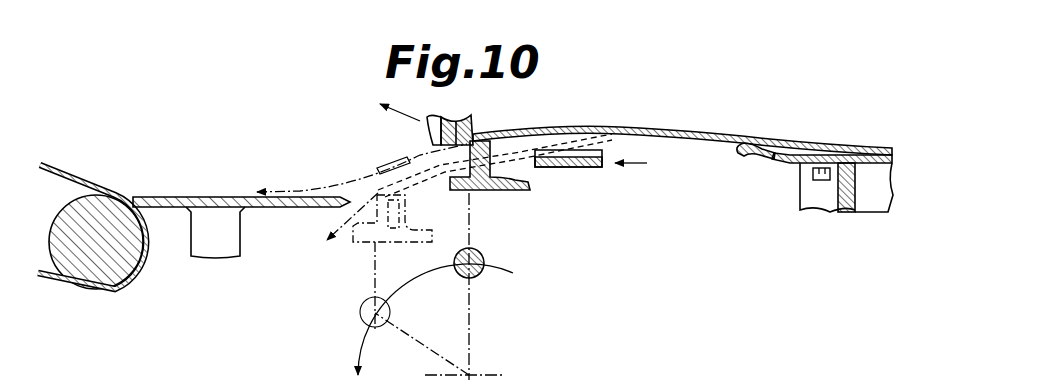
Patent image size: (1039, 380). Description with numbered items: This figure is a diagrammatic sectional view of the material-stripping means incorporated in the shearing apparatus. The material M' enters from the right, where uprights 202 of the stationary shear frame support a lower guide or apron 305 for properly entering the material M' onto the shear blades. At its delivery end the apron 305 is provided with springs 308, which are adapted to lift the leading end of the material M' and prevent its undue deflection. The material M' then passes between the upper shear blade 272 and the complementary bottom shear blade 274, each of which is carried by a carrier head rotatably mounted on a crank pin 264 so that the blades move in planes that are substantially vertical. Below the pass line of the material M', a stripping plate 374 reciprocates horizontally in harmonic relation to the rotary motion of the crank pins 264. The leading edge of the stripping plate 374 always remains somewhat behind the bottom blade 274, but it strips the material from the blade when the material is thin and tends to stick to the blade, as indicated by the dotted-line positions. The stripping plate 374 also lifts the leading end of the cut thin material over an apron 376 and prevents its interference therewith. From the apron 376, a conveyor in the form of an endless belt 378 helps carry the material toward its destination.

The endless belt 378 is at (80, 180).
The apron 376 is at (293, 207).
The shear blade 272 is at (473, 133).
The bottom shear blade 274 is at (450, 160).
The crank pin 264 is at (482, 258).
The material M' is at (682, 118).
The stripping plate 374 is at (575, 167).
The springs 308 is at (747, 160).
The lower guide or apron 305 is at (820, 200).
The uprights 202 is at (776, 5).